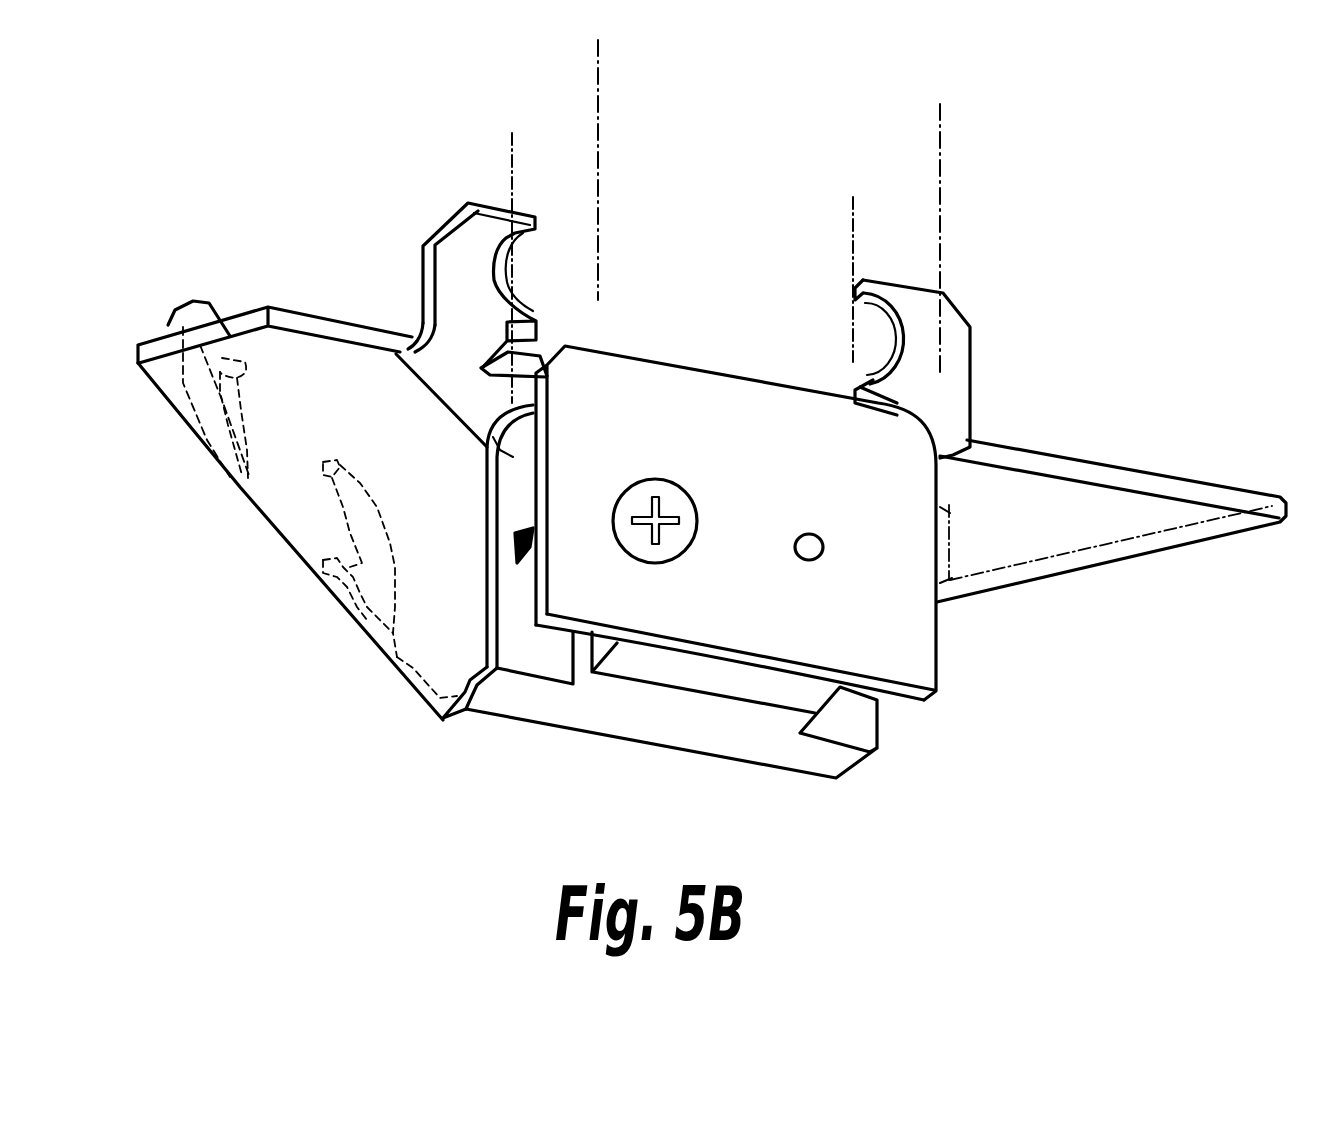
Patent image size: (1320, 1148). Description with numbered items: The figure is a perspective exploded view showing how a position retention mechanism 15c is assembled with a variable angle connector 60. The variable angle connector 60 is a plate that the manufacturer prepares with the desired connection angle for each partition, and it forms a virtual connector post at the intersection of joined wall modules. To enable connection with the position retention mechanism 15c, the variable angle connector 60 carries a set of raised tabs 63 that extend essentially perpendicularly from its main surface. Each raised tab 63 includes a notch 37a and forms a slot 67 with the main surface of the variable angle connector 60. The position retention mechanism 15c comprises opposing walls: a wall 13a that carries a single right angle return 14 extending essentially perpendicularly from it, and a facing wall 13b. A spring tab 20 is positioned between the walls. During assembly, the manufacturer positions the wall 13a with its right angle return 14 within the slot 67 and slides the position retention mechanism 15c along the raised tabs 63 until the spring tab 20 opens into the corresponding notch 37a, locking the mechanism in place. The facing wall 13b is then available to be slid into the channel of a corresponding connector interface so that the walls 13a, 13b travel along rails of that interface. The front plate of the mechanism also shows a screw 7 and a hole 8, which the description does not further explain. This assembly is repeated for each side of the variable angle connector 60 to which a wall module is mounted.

The screw 7 is at (648, 495).
The hole 8 is at (806, 535).
The wall 13a is at (393, 350).
The facing wall 13b is at (880, 496).
The right angle return 14 is at (546, 705).
The position retention mechanism 15c is at (951, 761).
The spring tab 20 is at (513, 548).
The notch 37a is at (546, 262).
The variable angle connector 60 is at (297, 503).
The raised tab 63 is at (463, 269).
The slot 67 is at (541, 344).